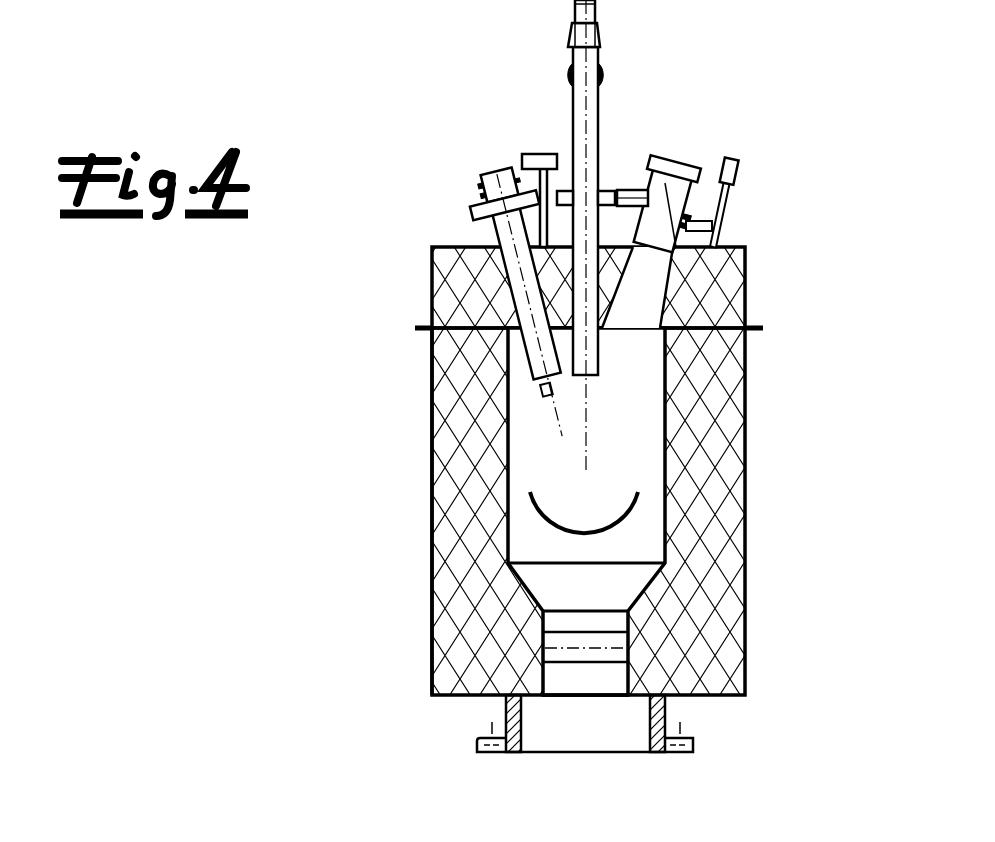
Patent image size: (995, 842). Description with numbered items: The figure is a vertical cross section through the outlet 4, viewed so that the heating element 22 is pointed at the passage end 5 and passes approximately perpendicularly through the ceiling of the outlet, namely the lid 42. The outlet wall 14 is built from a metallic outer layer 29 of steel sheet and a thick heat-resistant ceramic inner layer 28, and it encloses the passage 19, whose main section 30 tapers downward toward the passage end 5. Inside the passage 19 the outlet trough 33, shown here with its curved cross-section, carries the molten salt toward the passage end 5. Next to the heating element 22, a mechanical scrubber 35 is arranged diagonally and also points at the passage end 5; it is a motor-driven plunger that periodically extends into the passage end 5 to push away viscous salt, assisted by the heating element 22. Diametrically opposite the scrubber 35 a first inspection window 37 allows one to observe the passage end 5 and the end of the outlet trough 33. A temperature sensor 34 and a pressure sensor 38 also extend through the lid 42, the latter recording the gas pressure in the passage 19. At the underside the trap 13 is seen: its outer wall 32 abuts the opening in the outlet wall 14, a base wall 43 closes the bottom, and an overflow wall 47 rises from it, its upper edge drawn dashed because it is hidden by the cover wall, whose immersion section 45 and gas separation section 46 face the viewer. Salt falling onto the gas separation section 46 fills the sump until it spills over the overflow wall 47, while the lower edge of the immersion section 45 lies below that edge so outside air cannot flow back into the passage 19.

The outlet 4 is at (826, 80).
The passage end 5 is at (620, 744).
The trap 13 is at (583, 700).
The outlet wall 14 is at (752, 503).
The passage 19 is at (640, 424).
The heating element 22 is at (593, 358).
The inner layer 28 is at (457, 572).
The outer layer 29 is at (432, 625).
The main section 30 is at (542, 466).
The outer wall 32 is at (632, 690).
The outlet trough 33 is at (628, 512).
The temperature sensor 34 is at (638, 173).
The mechanical scrubber 35 is at (483, 156).
The first inspection window 37 is at (690, 165).
The pressure sensor 38 is at (530, 146).
The lid 42 is at (733, 295).
The base wall 43 is at (565, 698).
The immersion section 45 is at (618, 657).
The gas separation section 46 is at (613, 622).
The overflow wall 47 is at (543, 638).